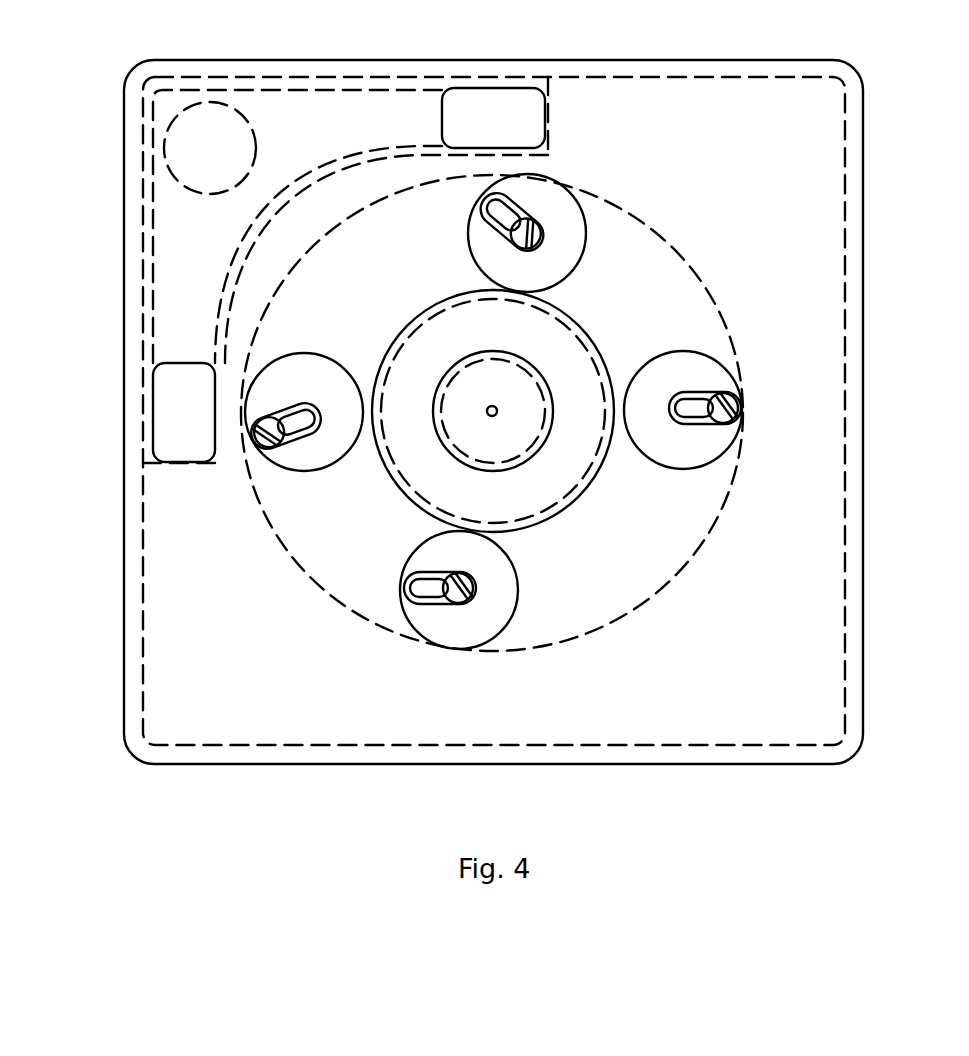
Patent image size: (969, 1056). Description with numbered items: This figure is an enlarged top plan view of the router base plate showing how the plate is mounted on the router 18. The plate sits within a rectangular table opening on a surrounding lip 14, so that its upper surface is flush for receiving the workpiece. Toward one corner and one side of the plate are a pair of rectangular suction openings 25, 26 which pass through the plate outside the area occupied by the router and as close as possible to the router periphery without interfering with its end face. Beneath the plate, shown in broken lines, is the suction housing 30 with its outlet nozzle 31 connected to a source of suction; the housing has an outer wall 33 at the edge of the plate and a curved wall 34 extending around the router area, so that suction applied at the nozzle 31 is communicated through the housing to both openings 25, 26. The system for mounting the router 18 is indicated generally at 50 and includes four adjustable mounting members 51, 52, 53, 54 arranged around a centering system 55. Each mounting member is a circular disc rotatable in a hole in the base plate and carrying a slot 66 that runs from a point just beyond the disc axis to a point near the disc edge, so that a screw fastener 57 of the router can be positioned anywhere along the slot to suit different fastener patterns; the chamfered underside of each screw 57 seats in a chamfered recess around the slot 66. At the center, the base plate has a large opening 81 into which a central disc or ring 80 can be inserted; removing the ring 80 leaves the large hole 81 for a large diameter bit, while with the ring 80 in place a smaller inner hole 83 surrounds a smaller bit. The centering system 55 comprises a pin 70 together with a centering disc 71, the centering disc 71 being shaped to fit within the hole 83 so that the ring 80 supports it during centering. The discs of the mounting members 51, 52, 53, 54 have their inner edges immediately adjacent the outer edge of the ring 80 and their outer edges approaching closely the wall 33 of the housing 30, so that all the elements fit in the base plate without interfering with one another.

The lip 14 is at (138, 680).
The router 18 is at (600, 635).
The suction opening 25 is at (175, 412).
The suction opening 26 is at (498, 98).
The suction housing 30 is at (336, 120).
The outlet nozzle 31 is at (221, 100).
The outer wall 33 is at (300, 245).
The curved wall 34 is at (148, 260).
The mounting system 50 is at (508, 196).
The adjustable mounting member 51 is at (712, 375).
The adjustable mounting member 52 is at (420, 628).
The adjustable mounting member 53 is at (312, 462).
The adjustable mounting member 54 is at (498, 233).
The centering system 55 is at (511, 417).
The screw fastener 57 is at (527, 215).
The slot 66 is at (300, 410).
The pin 70 is at (495, 408).
The centering disc 71 is at (575, 377).
The central disc 80 is at (560, 470).
The opening 81 is at (558, 520).
The inner hole 83 is at (530, 457).